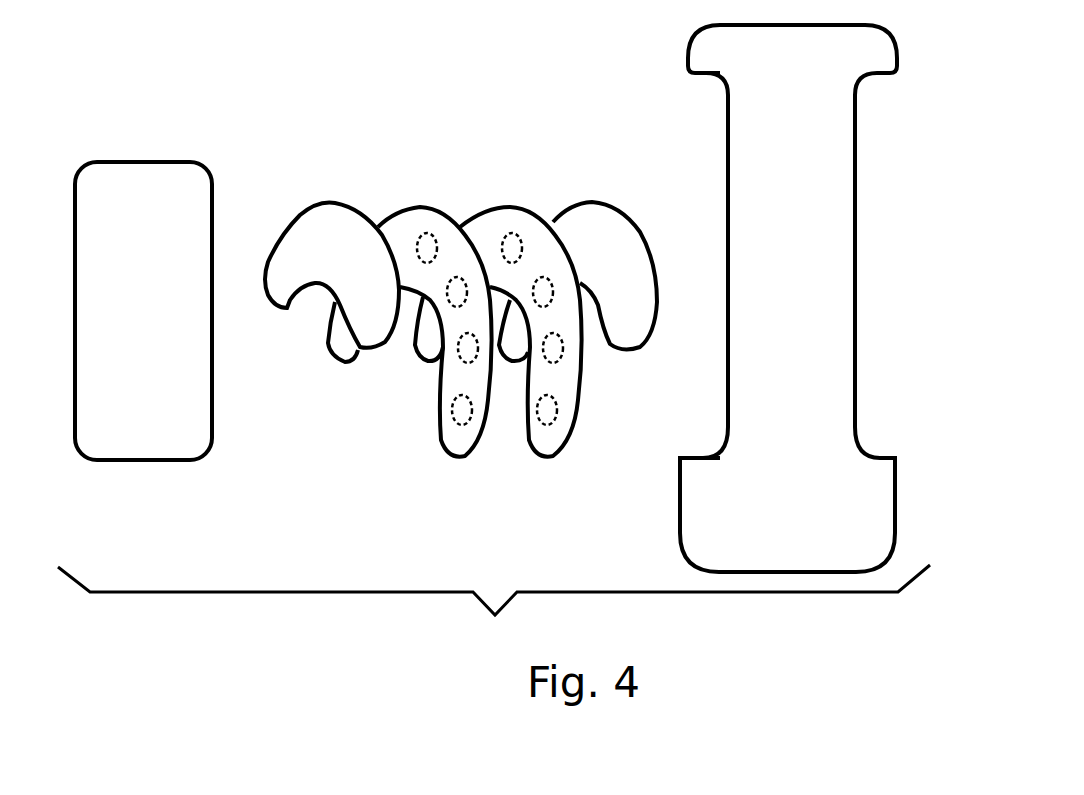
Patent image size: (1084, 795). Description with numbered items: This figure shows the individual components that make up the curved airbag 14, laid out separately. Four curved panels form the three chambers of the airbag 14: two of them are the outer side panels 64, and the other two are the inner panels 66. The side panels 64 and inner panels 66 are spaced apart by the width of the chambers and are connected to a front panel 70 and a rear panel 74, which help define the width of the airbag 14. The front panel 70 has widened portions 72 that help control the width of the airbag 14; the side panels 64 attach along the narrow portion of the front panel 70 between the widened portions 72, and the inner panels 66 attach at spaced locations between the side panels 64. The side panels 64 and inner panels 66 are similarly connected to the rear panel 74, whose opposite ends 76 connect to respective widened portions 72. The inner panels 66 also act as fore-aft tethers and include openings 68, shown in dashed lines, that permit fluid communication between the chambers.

The airbag 14 is at (494, 604).
The outer side panels 64 is at (333, 235).
The inner panels 66 is at (448, 230).
The openings 68 is at (425, 262).
The front panel 70 is at (823, 242).
The widened portions 72 is at (843, 62).
The rear panel 74 is at (124, 332).
The opposite ends 76 is at (137, 181).